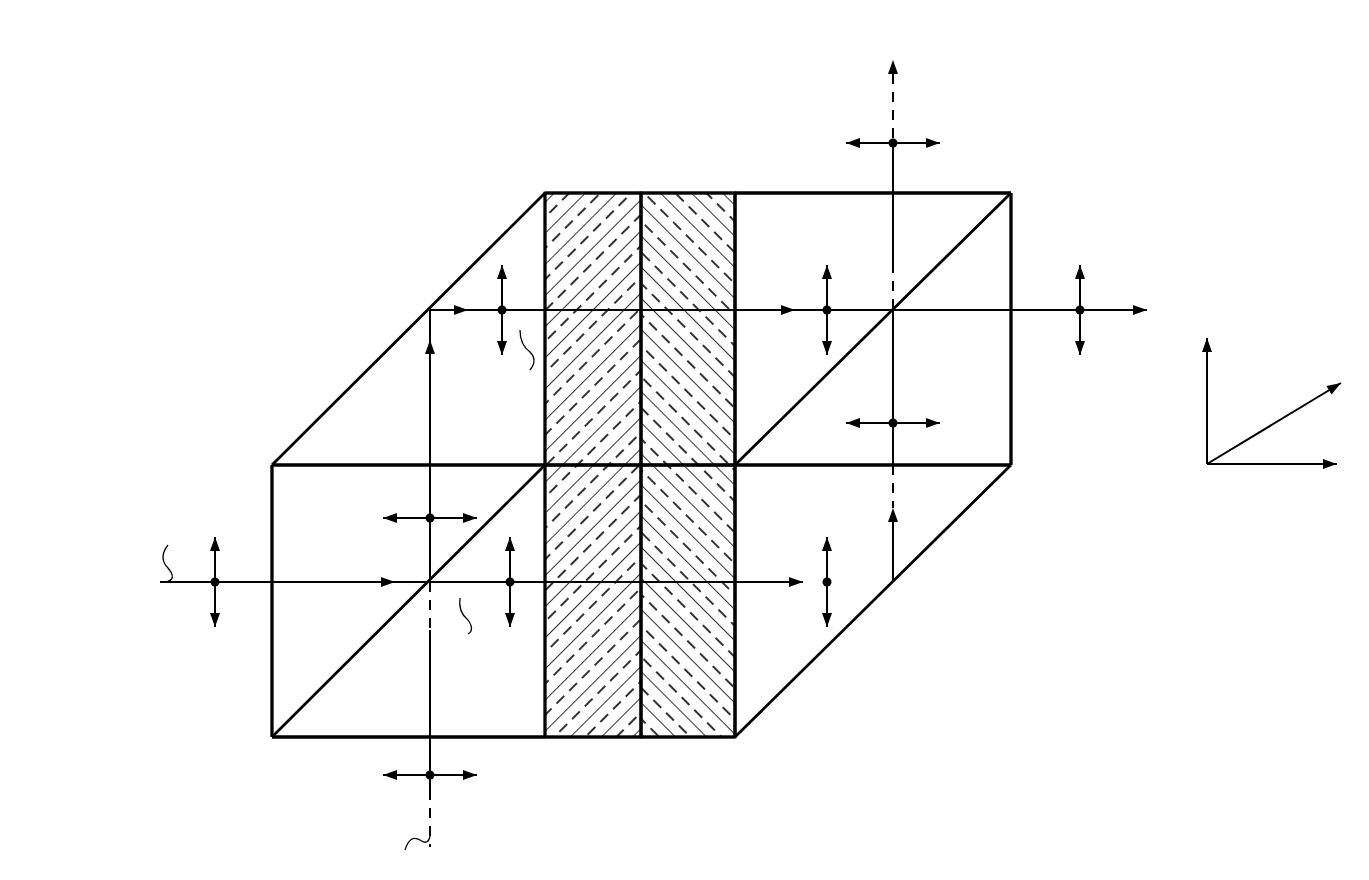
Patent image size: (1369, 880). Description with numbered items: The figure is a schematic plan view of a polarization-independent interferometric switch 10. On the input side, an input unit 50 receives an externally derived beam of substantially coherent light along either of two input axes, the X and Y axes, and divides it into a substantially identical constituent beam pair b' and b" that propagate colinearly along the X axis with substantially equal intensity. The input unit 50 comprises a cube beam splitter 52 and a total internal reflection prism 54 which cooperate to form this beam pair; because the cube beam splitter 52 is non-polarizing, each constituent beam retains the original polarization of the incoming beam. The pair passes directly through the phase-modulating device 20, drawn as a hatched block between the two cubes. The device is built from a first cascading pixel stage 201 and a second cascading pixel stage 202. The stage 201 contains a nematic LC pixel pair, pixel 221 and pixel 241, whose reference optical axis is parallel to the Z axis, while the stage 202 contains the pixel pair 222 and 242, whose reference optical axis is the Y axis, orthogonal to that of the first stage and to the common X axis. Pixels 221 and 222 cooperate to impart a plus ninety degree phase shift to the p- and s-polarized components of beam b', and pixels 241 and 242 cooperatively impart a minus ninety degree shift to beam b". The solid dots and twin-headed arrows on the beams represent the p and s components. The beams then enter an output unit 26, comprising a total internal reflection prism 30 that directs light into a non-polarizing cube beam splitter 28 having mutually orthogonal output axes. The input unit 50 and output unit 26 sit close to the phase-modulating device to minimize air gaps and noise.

The interferometric switch 10 is at (406, 68).
The phase-modulating device 20 is at (740, 814).
The cascading pixel stage 201 is at (640, 746).
The cascading pixel stage 202 is at (736, 746).
The nematic LC pixel 221 is at (588, 197).
The nematic LC pixel 222 is at (705, 197).
The nematic LC pixel 241 is at (546, 679).
The nematic LC pixel 242 is at (722, 550).
The output unit 26 is at (1006, 535).
The cube beam splitter 28 is at (998, 242).
The total internal reflection prism 30 is at (920, 532).
The input unit 50 is at (350, 218).
The cube beam splitter 52 is at (343, 720).
The total internal reflection prism 54 is at (378, 380).